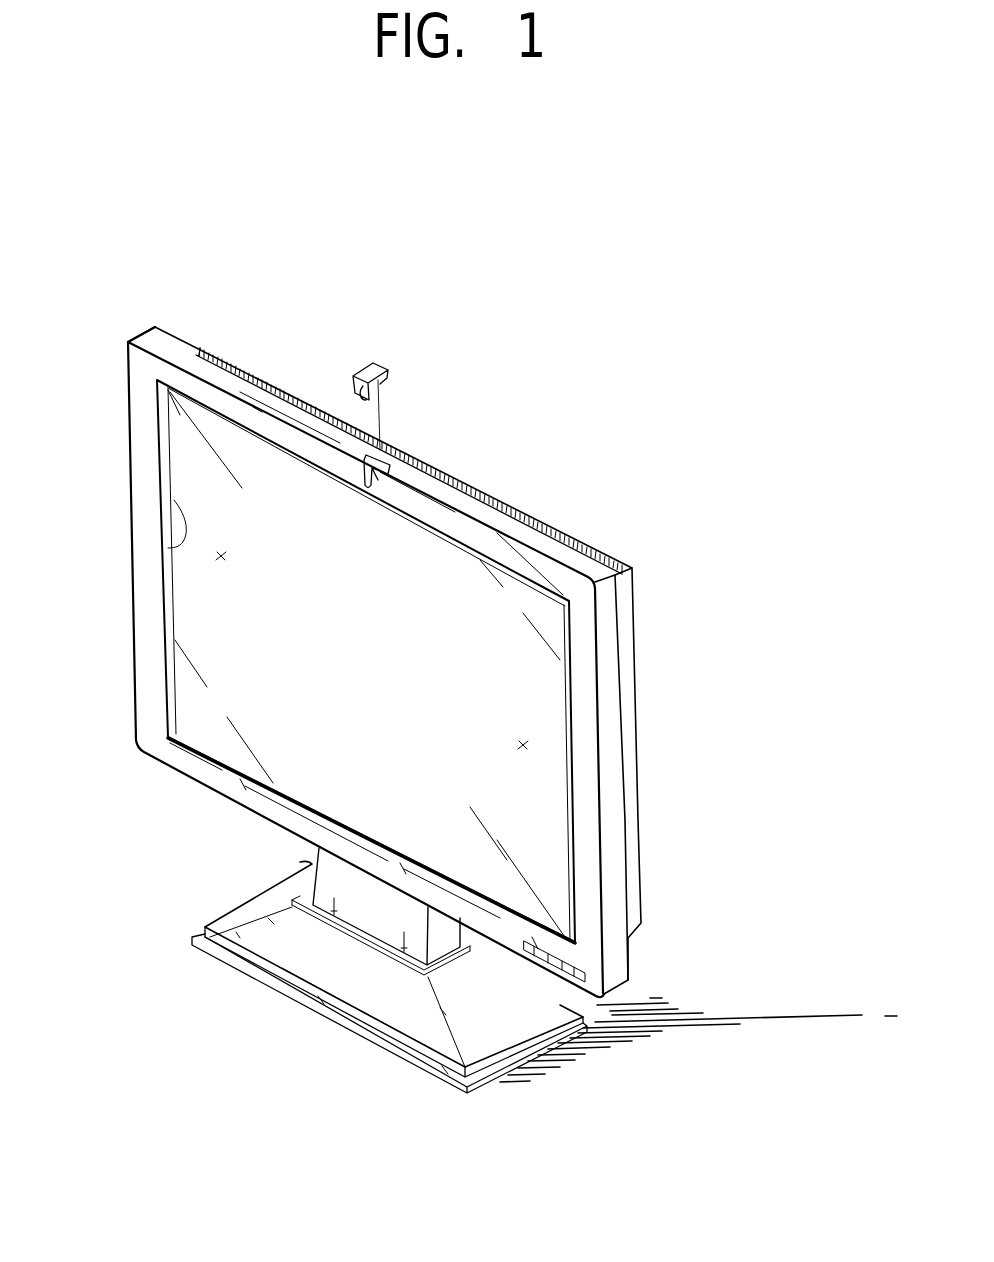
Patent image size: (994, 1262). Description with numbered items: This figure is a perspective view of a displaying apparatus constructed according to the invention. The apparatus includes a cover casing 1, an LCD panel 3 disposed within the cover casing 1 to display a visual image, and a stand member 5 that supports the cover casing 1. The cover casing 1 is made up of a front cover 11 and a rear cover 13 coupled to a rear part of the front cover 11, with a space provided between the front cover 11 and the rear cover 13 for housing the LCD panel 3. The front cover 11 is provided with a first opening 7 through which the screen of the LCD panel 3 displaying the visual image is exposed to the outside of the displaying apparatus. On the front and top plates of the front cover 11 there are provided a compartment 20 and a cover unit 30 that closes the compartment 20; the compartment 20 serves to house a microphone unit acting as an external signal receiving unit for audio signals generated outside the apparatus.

The cover casing 1 is at (538, 396).
The LCD panel 3 is at (344, 664).
The stand member 5 is at (353, 998).
The first opening 7 is at (168, 548).
The front cover 11 is at (452, 468).
The rear cover 13 is at (556, 528).
The compartment 20 is at (360, 472).
The cover unit 30 is at (393, 360).